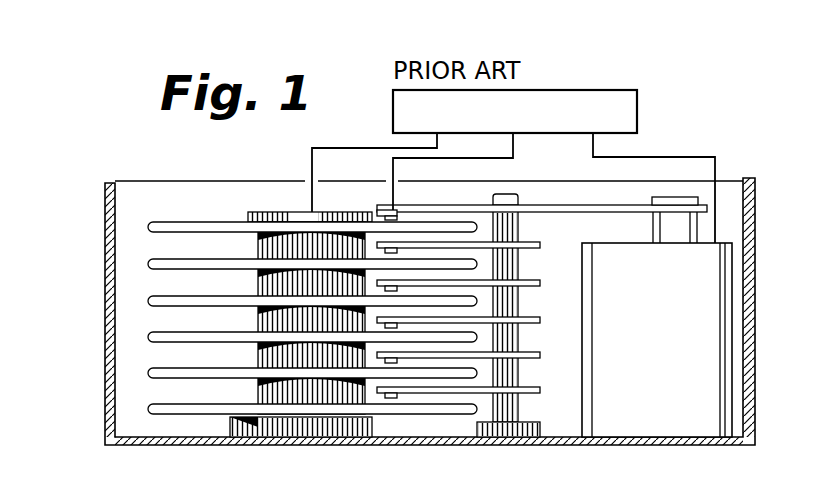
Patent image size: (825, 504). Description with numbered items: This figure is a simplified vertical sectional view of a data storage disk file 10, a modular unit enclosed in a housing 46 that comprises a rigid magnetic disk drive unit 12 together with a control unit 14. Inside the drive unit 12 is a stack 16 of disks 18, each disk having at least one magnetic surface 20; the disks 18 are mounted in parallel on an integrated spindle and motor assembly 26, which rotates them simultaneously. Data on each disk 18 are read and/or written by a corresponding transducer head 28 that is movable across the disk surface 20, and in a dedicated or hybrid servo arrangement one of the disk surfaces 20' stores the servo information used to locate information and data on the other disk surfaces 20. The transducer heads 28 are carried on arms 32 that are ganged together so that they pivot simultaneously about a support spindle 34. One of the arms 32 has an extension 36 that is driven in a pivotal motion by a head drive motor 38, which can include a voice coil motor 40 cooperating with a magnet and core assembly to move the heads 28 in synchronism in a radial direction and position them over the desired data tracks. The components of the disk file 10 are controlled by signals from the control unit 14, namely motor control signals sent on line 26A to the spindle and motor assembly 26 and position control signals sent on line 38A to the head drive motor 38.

The data storage disk file 10 is at (748, 127).
The rigid magnetic disk drive unit 12 is at (293, 174).
The control unit 14 is at (637, 100).
The stack 16 is at (223, 214).
The disks 18 is at (148, 337).
The magnetic surface 20 is at (269, 248).
The servo disk surface 20' is at (279, 186).
The integrated spindle and motor assembly 26 is at (306, 392).
The motor control line 26A is at (370, 147).
The transducer head 28 is at (386, 208).
The arms 32 is at (528, 321).
The support spindle 34 is at (525, 407).
The extension 36 is at (553, 205).
The head drive motor 38 is at (703, 311).
The position control line 38A is at (641, 156).
The voice coil motor 40 is at (698, 228).
The housing 46 is at (757, 385).